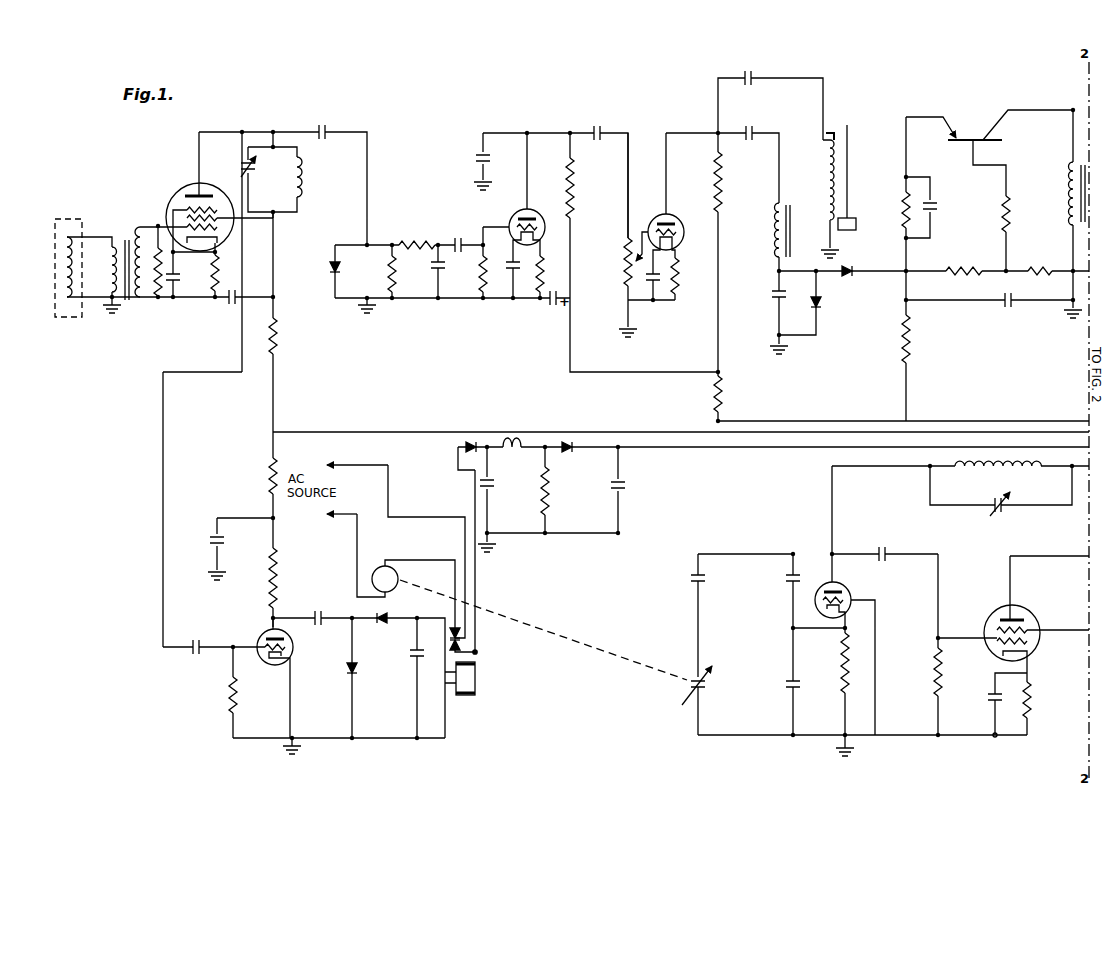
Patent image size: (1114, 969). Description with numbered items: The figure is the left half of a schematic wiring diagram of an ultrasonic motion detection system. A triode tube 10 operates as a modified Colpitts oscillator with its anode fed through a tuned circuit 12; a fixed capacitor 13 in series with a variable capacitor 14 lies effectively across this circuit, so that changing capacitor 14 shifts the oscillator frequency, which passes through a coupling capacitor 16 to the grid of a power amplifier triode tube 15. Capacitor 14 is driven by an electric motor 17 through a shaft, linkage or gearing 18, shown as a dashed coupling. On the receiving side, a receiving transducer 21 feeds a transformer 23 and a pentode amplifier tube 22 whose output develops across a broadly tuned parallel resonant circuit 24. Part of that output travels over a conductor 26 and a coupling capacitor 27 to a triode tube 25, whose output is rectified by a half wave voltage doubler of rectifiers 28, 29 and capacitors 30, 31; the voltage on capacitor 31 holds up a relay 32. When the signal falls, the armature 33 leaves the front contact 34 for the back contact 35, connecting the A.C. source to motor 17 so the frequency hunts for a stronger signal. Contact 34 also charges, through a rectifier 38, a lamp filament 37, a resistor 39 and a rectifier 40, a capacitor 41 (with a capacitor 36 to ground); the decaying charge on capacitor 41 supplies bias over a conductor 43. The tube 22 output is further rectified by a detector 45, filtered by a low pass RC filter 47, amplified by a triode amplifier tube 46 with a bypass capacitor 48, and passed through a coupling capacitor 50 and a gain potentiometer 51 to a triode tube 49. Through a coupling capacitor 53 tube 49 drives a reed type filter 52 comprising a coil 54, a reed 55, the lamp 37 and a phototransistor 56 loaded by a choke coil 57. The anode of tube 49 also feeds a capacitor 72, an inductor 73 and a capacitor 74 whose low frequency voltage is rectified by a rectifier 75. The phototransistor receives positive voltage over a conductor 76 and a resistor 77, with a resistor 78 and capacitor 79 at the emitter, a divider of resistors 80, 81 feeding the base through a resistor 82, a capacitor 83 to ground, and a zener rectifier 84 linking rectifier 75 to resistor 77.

The triode tube 10 is at (852, 601).
The tuned circuit 12 is at (1033, 499).
The fixed capacitor 13 is at (696, 586).
The variable capacitor 14 is at (684, 700).
The triode tube 15 is at (1039, 644).
The coupling capacitor 16 is at (891, 555).
The electric motor 17 is at (398, 579).
The shaft, linkage or gearing 18 is at (562, 635).
The receiving transducer 21 is at (68, 317).
The pentode amplifier tube 22 is at (196, 184).
The transformer 23 is at (142, 308).
The parallel resonant circuit 24 is at (282, 196).
The triode tube 25 is at (291, 657).
The conductor 26 is at (163, 447).
The coupling capacitor 27 is at (191, 650).
The rectifier 28 is at (354, 671).
The rectifier 29 is at (380, 616).
The capacitor 30 is at (323, 621).
The capacitor 31 is at (420, 661).
The relay 32 is at (476, 678).
The armature 33 is at (466, 637).
The front contact 34 is at (477, 652).
The back contact 35 is at (454, 626).
The capacitor 36 is at (493, 488).
The lamp filament 37 is at (523, 445).
The rectifier 38 is at (478, 445).
The resistor 39 is at (550, 505).
The rectifier 40 is at (576, 446).
The capacitor 41 is at (630, 499).
The conductor 43 is at (710, 448).
The detector 45 is at (336, 278).
The triode amplifier tube 46 is at (536, 212).
The low pass RC filter 47 is at (430, 293).
The capacitor 48 is at (481, 163).
The triode tube 49 is at (671, 216).
The coupling capacitor 50 is at (593, 122).
The potentiometer 51 is at (624, 276).
The reed type filter 52 is at (835, 128).
The coupling capacitor 53 is at (752, 74).
The coil 54 is at (827, 182).
The reed 55 is at (849, 176).
The phototransistor 56 is at (975, 131).
The choke coil 57 is at (1070, 205).
The capacitor 72 is at (753, 140).
The inductor 73 is at (771, 249).
The capacitor 74 is at (777, 292).
The rectifier 75 is at (821, 307).
The conductor 76 is at (982, 420).
The resistor 77 is at (904, 357).
The resistor 78 is at (905, 198).
The capacitor 79 is at (938, 208).
The resistor 80 is at (961, 268).
The resistor 81 is at (1041, 268).
The resistor 82 is at (1009, 212).
The capacitor 83 is at (1012, 308).
The rectifier 84 is at (853, 277).